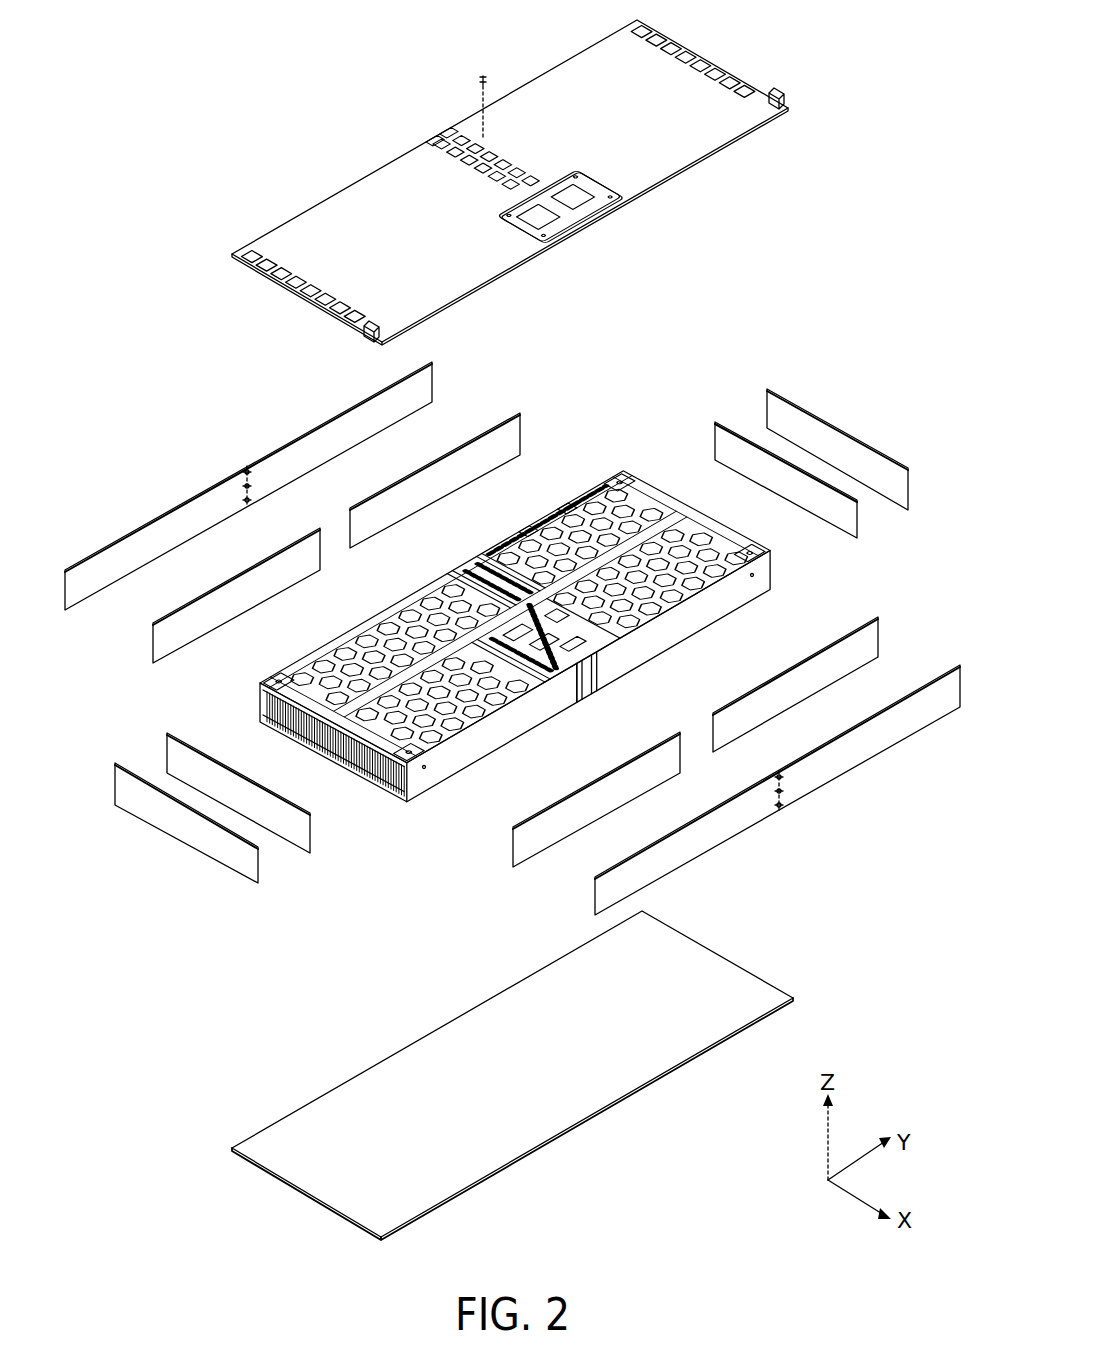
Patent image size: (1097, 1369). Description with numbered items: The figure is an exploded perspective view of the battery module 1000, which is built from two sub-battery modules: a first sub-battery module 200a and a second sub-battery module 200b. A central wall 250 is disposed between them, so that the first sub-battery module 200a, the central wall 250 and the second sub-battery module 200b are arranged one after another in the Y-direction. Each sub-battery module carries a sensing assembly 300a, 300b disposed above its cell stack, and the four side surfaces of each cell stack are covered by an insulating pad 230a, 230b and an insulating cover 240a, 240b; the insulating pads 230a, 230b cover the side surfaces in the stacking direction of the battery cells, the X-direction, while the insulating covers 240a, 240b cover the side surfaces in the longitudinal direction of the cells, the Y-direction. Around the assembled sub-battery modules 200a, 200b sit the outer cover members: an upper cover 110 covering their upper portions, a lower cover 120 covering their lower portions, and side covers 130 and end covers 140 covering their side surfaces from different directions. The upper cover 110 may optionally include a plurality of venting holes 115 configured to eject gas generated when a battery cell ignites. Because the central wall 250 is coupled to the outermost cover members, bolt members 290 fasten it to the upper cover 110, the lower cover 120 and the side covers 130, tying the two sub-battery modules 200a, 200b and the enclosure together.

The battery module 1000 is at (290, 118).
The upper cover 110 is at (705, 148).
The venting hole 115 is at (704, 53).
The lower cover 120 is at (715, 963).
The side cover 130 is at (213, 486).
The end cover 140 is at (838, 438).
The first sub-battery module 200a is at (515, 674).
The second sub-battery module 200b is at (627, 558).
The insulating pad 230a is at (150, 640).
The insulating pad 230b is at (522, 422).
The insulating cover 240a is at (168, 762).
The insulating cover 240b is at (718, 442).
The central wall 250 is at (572, 688).
The bolt member 290 is at (483, 76).
The sensing assembly 300a is at (337, 628).
The sensing assembly 300b is at (519, 514).